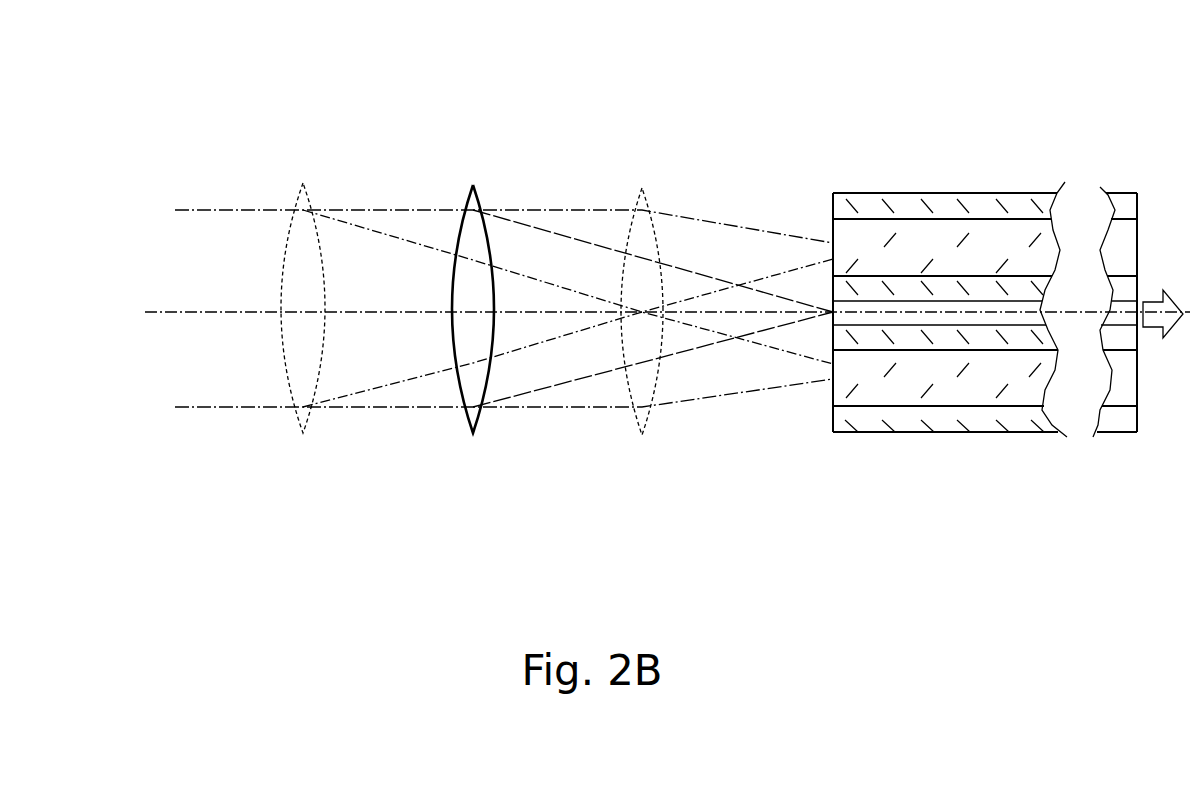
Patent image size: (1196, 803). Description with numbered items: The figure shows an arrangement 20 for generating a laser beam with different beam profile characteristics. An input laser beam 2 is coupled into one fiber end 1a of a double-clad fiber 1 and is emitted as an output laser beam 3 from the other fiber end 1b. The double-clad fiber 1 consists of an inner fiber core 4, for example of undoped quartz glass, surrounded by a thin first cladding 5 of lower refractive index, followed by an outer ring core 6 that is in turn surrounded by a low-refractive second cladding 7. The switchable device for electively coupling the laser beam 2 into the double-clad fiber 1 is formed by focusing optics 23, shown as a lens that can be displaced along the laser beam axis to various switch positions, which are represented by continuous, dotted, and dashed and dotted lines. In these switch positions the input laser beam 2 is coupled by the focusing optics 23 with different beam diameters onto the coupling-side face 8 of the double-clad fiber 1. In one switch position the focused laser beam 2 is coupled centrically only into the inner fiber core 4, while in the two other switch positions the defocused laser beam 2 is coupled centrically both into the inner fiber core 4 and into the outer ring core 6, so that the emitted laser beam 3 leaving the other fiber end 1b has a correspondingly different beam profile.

The double-clad fiber 1 is at (985, 183).
The fiber end 1a is at (890, 192).
The other fiber end 1b is at (1125, 191).
The input laser beam 2 is at (385, 233).
The emitted laser beam 3 is at (1152, 318).
The inner fiber core 4 is at (868, 318).
The first cladding 5 is at (912, 340).
The outer ring core 6 is at (963, 380).
The second cladding 7 is at (1008, 432).
The coupling-side face 8 is at (832, 222).
The arrangement 20 is at (620, 145).
The focusing optics 23 is at (305, 432).